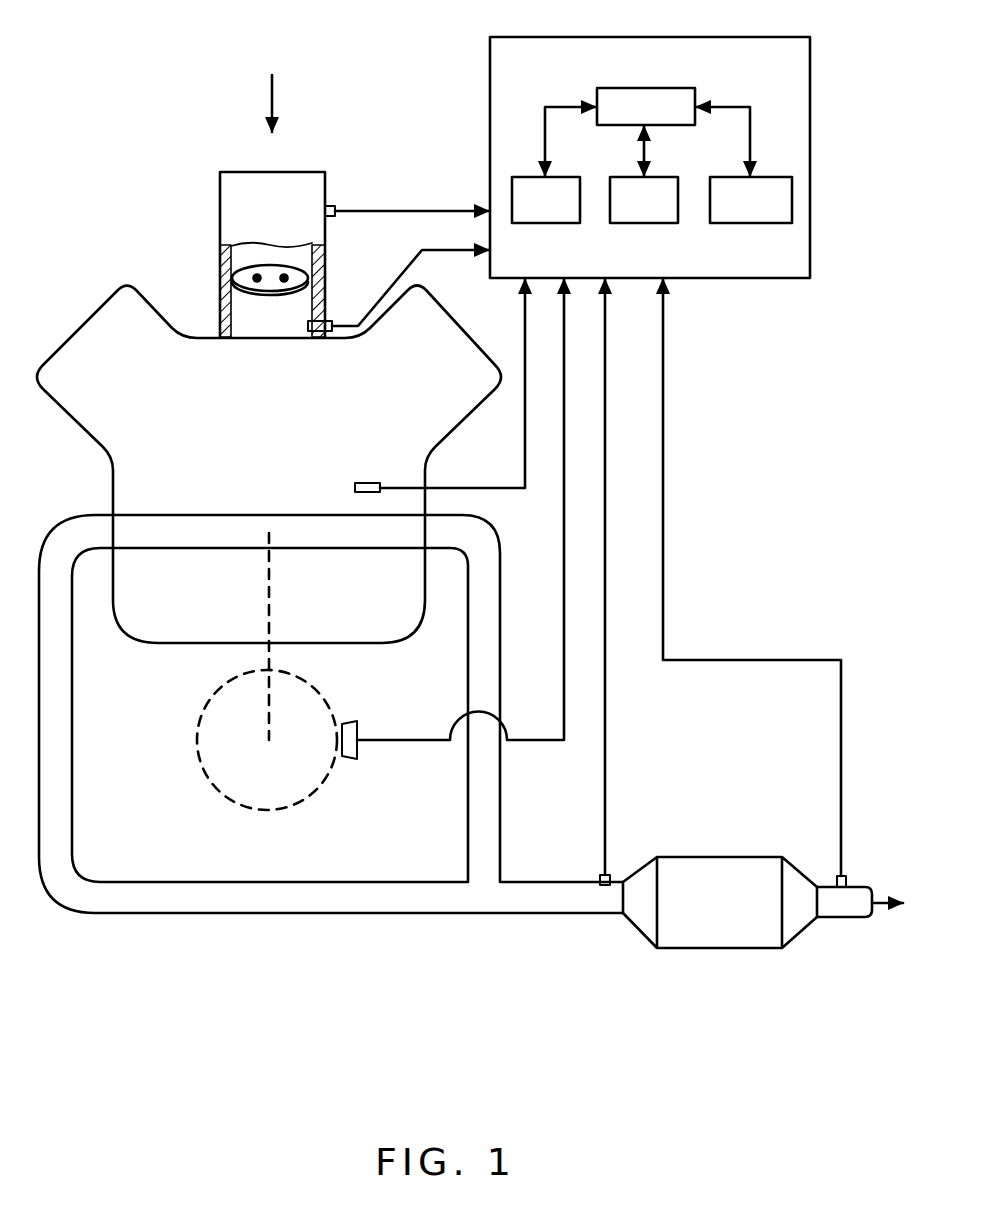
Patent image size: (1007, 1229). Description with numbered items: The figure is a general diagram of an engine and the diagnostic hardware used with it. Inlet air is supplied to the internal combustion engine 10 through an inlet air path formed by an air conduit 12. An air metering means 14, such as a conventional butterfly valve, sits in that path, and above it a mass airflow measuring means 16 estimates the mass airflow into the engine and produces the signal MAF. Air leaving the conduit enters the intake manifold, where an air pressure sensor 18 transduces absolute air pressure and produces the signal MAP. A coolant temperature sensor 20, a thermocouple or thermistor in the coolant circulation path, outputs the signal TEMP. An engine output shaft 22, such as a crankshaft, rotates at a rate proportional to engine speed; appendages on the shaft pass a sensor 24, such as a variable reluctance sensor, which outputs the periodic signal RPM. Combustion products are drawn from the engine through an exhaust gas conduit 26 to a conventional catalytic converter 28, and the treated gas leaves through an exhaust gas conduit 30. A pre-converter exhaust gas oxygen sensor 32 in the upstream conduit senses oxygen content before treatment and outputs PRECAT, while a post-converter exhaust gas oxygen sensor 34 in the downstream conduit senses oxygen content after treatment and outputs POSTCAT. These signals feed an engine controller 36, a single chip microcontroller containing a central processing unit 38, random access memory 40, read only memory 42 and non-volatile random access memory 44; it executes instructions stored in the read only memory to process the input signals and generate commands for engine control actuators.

The internal combustion engine 10 is at (172, 378).
The air conduit 12 is at (295, 185).
The air metering means 14 is at (270, 263).
The mass airflow measuring means 16 is at (333, 207).
The air pressure sensor 18 is at (326, 321).
The coolant temperature sensor 20 is at (362, 483).
The engine output shaft 22 is at (225, 722).
The sensor 24 is at (353, 757).
The exhaust gas conduit 26 is at (243, 898).
The catalytic converter 28 is at (725, 933).
The exhaust gas conduit 30 is at (850, 907).
The pre-converter exhaust gas oxygen sensor 32 is at (598, 878).
The post-converter exhaust gas oxygen sensor 34 is at (848, 877).
The engine controller 36 is at (800, 98).
The central processing unit 38 is at (603, 92).
The random access memory 40 is at (557, 220).
The read only memory 42 is at (648, 220).
The non-volatile random access memory 44 is at (770, 220).